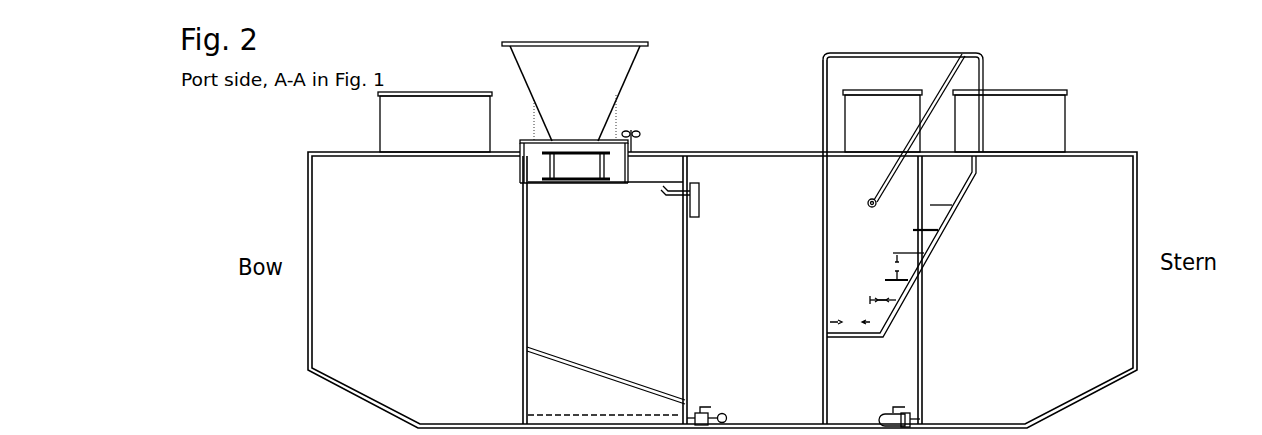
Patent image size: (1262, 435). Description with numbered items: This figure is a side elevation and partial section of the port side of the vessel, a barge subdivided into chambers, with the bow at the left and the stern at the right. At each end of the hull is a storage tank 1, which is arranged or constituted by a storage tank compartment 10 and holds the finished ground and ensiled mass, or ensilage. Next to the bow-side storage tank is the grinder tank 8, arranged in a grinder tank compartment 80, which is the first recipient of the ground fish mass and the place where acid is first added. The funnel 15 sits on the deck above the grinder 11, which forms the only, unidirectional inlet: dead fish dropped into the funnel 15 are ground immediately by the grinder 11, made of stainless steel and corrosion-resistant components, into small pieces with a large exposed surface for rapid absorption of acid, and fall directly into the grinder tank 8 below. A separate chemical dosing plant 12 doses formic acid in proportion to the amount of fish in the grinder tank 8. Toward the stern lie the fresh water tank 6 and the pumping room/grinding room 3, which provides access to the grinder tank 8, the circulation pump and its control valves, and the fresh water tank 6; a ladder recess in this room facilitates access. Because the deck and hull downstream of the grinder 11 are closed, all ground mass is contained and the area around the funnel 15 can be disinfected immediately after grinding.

The storage tank 1 is at (722, 259).
The storage tank compartment 10 is at (722, 259).
The pumping room/grinding room 3 is at (903, 240).
The fresh water tank 6 is at (757, 242).
The grinder tank 8 is at (605, 290).
The grinder tank compartment 80 is at (605, 290).
The grinder 11 is at (580, 156).
The chemical dosing plant 12 is at (673, 202).
The funnel 15 is at (575, 91).